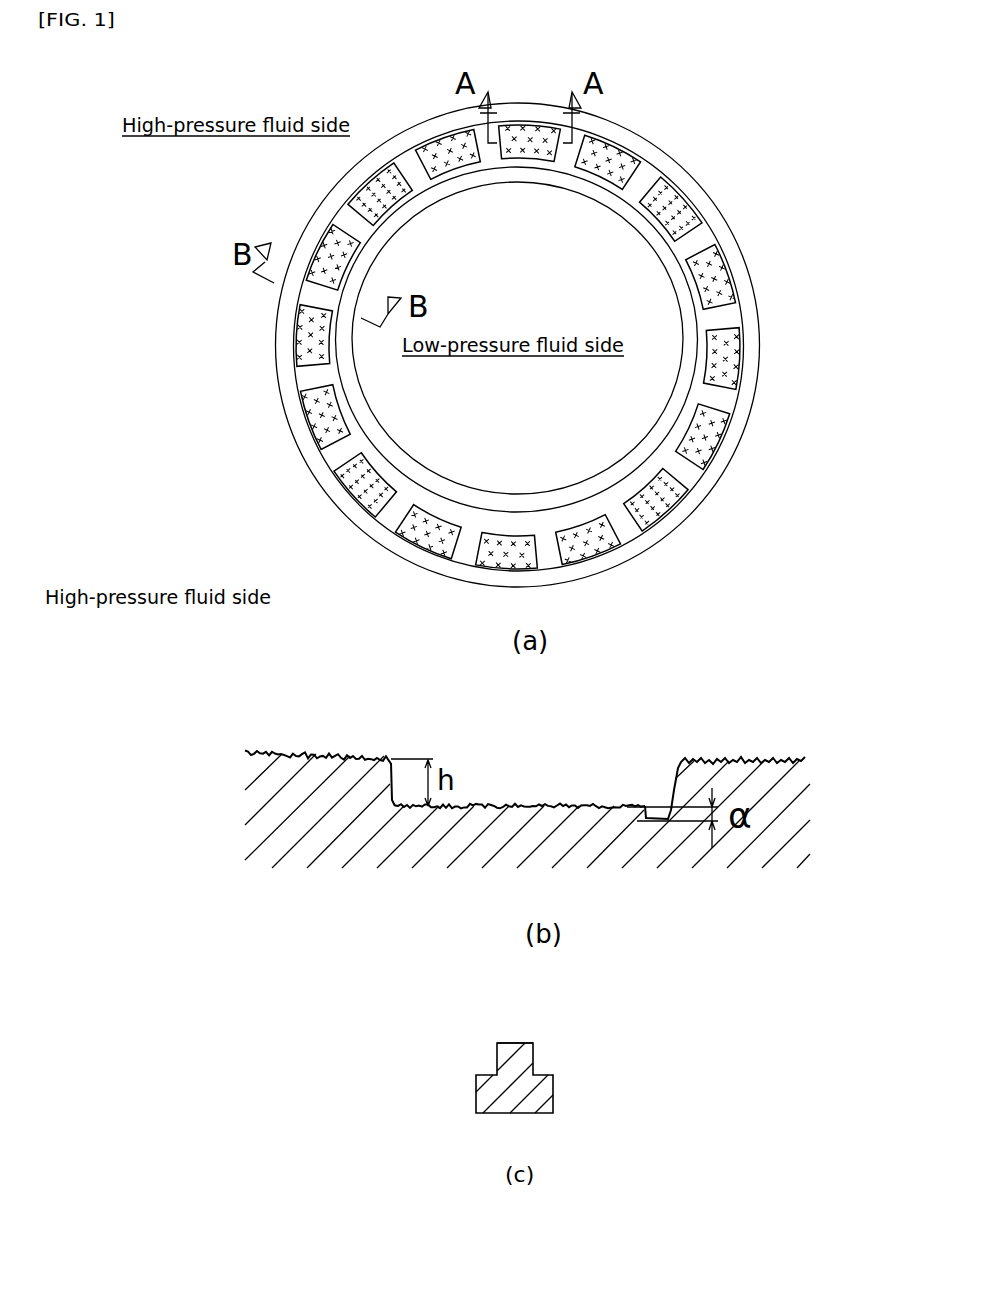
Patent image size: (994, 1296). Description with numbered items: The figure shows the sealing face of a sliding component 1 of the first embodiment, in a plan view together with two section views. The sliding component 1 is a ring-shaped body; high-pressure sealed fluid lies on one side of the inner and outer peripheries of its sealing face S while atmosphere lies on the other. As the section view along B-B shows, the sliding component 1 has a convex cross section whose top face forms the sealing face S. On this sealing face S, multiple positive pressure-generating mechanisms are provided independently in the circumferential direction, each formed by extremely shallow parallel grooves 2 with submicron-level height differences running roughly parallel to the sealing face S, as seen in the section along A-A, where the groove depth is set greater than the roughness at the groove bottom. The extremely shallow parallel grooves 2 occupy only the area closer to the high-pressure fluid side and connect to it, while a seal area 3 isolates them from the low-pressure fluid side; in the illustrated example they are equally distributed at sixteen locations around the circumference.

The sliding component 1 is at (647, 137).
The extremely shallow parallel grooves 2 is at (725, 288).
The seal area 3 is at (528, 158).
The sealing face S is at (412, 168).